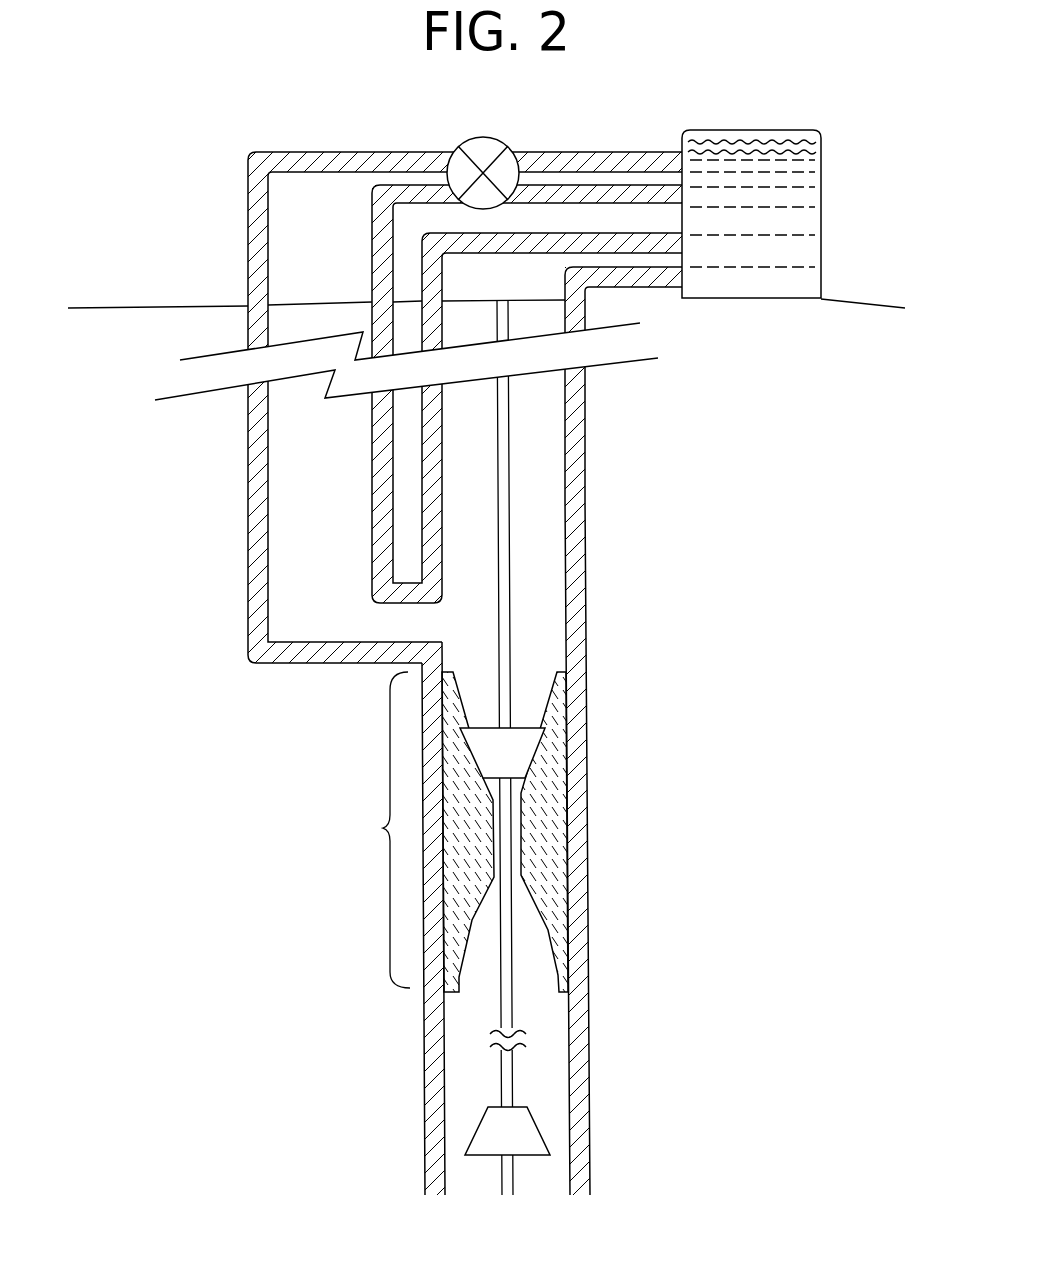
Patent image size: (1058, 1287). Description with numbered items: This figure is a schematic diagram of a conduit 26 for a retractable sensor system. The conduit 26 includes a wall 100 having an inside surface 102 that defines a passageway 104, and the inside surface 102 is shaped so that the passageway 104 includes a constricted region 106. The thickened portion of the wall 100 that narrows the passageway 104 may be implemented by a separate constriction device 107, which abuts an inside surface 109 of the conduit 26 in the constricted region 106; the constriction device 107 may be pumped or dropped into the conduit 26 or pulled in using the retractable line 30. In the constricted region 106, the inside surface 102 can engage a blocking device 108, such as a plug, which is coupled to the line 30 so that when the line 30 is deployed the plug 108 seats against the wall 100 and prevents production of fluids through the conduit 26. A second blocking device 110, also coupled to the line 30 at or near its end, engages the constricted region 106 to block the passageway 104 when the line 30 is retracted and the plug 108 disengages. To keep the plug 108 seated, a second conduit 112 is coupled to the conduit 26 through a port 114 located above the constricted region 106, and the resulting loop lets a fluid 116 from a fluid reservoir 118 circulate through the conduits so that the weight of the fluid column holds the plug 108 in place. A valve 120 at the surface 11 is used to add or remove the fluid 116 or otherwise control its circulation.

The surface 11 is at (122, 306).
The conduit 26 is at (587, 700).
The retractable line 30 is at (510, 458).
The wall 100 is at (432, 1032).
The inside surface 102 is at (566, 564).
The passageway 104 is at (538, 632).
The constricted region 106 is at (383, 828).
The constriction device 107 is at (555, 833).
The blocking device 108 is at (523, 728).
The inside surface of the conduit 109 is at (564, 784).
The second blocking device 110 is at (540, 1128).
The second conduit 112 is at (287, 625).
The port 114 is at (398, 625).
The fluid 116 is at (805, 143).
The fluid reservoir 118 is at (822, 229).
The valve 120 is at (482, 136).